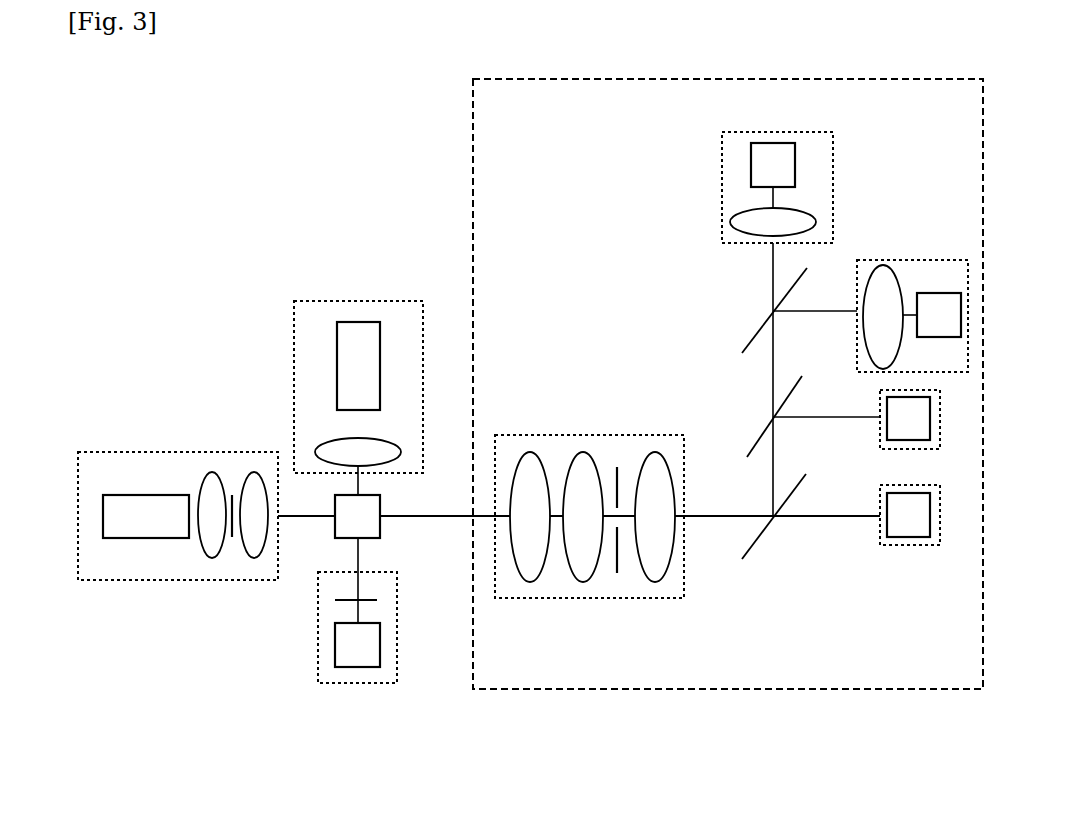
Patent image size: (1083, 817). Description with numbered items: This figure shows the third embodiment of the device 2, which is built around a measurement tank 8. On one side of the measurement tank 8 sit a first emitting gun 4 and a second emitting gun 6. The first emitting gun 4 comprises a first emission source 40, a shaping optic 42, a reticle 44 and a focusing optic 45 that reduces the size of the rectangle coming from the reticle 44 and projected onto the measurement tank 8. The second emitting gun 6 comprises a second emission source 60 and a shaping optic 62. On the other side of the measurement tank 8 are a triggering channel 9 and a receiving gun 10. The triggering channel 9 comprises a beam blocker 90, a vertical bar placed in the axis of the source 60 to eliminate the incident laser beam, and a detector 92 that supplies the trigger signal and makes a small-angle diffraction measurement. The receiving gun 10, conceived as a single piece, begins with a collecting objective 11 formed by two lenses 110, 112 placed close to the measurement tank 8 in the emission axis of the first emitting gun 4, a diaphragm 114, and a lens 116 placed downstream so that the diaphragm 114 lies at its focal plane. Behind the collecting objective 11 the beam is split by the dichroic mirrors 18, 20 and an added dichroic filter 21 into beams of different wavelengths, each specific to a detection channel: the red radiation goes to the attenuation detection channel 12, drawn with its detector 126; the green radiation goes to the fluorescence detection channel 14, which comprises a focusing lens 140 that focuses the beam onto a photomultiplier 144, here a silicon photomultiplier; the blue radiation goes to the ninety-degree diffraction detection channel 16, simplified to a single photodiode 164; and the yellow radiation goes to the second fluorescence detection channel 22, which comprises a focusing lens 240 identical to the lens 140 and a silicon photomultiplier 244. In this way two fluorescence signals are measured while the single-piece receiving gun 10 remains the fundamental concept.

The device 2 is at (268, 209).
The first emitting gun 4 is at (178, 499).
The first emission source 40 is at (146, 516).
The shaping optic 42 is at (212, 515).
The reticle 44 is at (233, 534).
The focusing optic 45 is at (254, 515).
The second emitting gun 6 is at (358, 370).
The second emission source 60 is at (358, 366).
The shaping optic 62 is at (358, 452).
The measurement tank 8 is at (357, 516).
The triggering channel 9 is at (368, 627).
The beam blocker 90 is at (362, 610).
The detector 92 is at (357, 645).
The receiving gun 10 is at (728, 398).
The collecting objective 11 is at (589, 528).
The lens 110 is at (530, 517).
The lens 112 is at (583, 517).
The diaphragm 114 is at (610, 507).
The lens 116 is at (655, 517).
The detection channel 12 is at (910, 528).
The sensor 126 is at (908, 515).
The fluorescence detection channel 14 is at (897, 316).
The focusing lens 140 is at (883, 317).
The photomultiplier 144 is at (939, 315).
The 90° diffraction detection channel 16 is at (910, 431).
The photodiode 164 is at (908, 418).
The dichroic mirror 18 is at (759, 518).
The dichroic mirror 20 is at (763, 416).
The beam splitter 21 is at (762, 310).
The fluorescence detection channel 22 is at (777, 177).
The focusing lens 240 is at (773, 222).
The silicon photomultiplier 244 is at (773, 165).